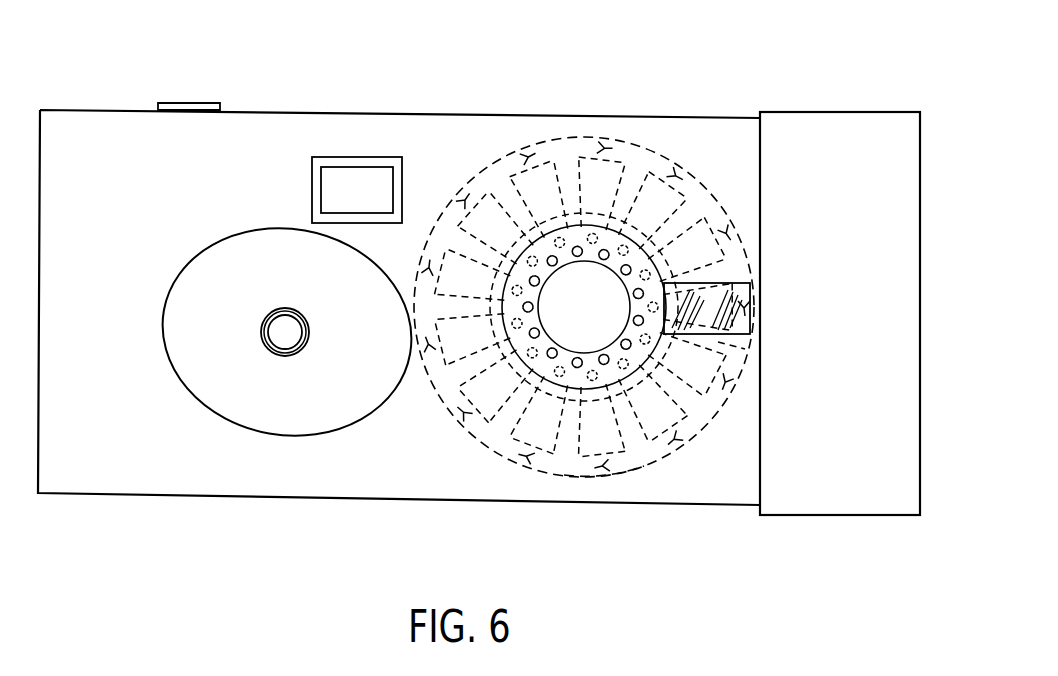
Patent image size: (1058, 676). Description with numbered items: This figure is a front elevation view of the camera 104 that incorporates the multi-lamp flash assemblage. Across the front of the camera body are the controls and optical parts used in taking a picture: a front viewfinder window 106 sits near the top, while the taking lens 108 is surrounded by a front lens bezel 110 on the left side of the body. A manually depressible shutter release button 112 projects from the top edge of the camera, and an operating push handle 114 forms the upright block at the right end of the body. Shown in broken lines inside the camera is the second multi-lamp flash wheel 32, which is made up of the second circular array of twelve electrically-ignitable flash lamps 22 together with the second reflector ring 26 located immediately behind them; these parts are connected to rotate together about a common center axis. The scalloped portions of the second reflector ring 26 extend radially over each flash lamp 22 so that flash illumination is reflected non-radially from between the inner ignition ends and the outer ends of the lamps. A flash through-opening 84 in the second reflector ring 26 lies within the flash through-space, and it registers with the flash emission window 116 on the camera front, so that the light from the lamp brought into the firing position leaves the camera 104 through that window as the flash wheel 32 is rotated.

The electrically-ignitable flash lamps 22 is at (584, 350).
The second reflector ring 26 is at (584, 340).
The second multi-lamp flash wheel 32 is at (619, 515).
The flash through-opening 84 is at (735, 345).
The camera 104 is at (413, 108).
The front viewfinder window 106 is at (337, 178).
The taking lens 108 is at (287, 329).
The front lens bezel 110 is at (165, 352).
The manually depressible shutter release button 112 is at (158, 103).
The operating push handle 114 is at (847, 125).
The flash emission window 116 is at (750, 286).